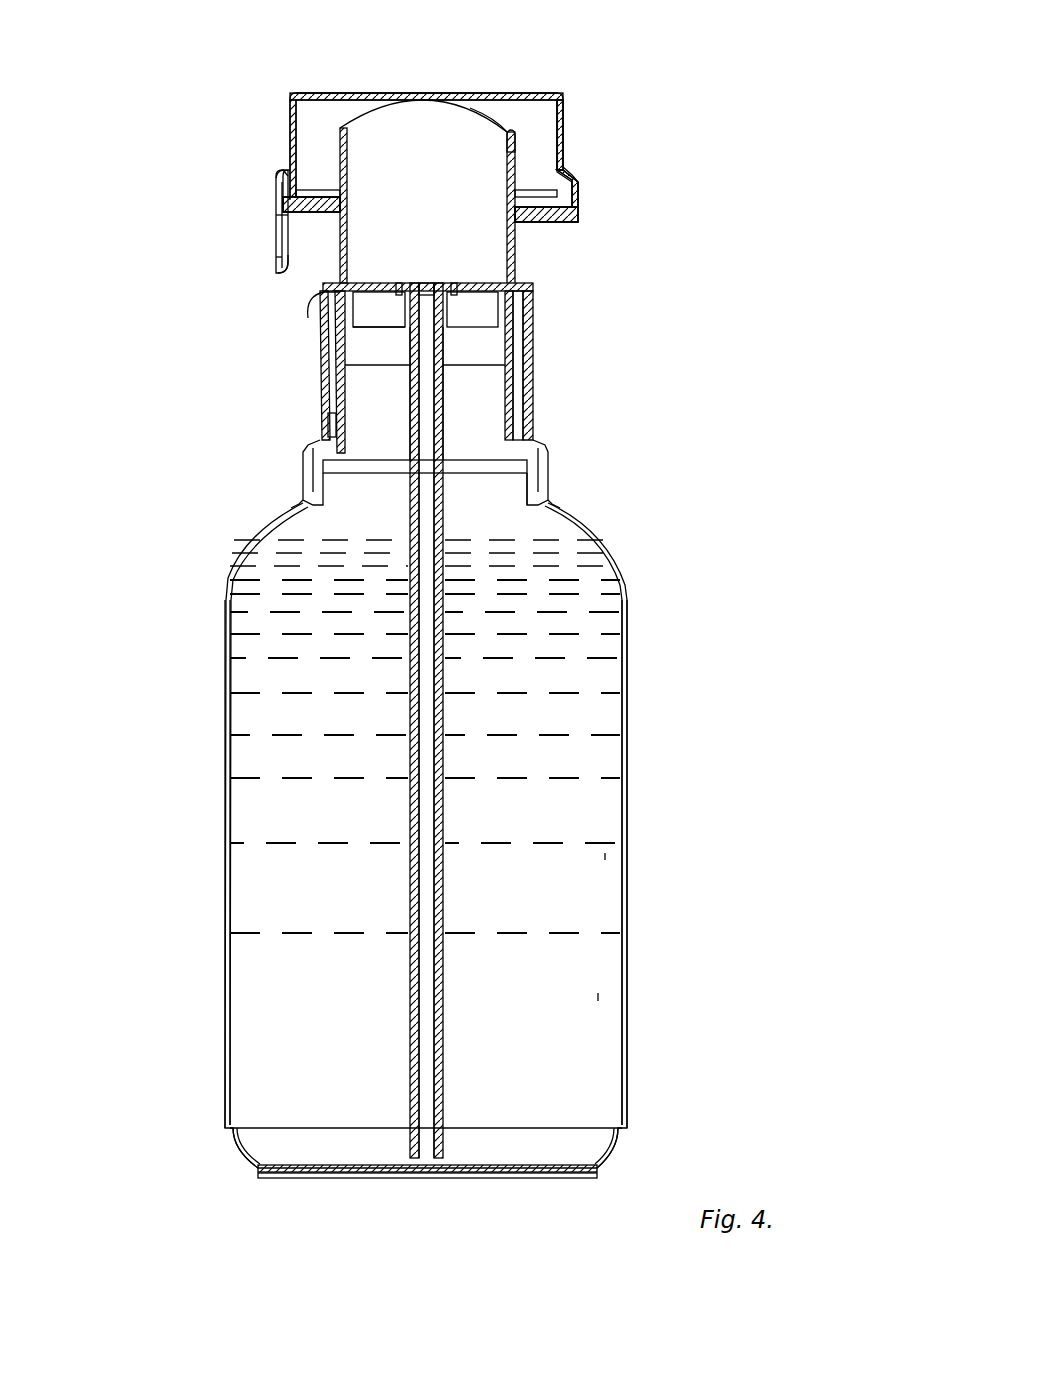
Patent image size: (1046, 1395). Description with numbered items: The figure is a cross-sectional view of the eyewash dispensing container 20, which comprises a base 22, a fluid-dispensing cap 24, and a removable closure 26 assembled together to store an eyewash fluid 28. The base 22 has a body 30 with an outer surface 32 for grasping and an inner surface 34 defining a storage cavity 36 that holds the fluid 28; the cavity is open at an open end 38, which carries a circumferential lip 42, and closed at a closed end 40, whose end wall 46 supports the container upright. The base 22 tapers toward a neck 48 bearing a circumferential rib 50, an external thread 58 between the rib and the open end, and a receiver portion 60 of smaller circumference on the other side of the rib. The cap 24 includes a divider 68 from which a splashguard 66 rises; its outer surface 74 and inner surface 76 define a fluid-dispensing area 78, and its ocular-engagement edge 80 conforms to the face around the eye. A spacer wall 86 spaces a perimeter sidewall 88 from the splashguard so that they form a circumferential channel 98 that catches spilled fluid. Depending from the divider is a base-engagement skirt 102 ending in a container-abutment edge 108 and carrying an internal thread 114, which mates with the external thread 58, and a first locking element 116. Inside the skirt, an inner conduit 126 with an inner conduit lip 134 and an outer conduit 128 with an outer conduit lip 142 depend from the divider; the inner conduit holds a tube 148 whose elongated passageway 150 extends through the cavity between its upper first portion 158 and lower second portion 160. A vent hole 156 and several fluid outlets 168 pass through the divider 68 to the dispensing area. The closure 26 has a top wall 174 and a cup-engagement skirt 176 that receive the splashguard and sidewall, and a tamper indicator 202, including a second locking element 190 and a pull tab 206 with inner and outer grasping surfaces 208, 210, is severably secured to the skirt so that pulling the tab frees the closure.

The eyewash dispensing container 20 is at (150, 86).
The base 22 is at (626, 560).
The fluid-dispensing cap 24 is at (520, 263).
The closure 26 is at (555, 78).
The eyewash fluid 28 is at (592, 692).
The body 30 is at (636, 648).
The outer surface 32 is at (631, 825).
The inner surface 34 is at (605, 855).
The storage cavity 36 is at (598, 997).
The open end 38 is at (390, 72).
The closed end 40 is at (436, 1208).
The circumferential lip 42 is at (522, 297).
The end wall 46 is at (295, 1177).
The neck 48 is at (330, 372).
The circumferential rib 50 is at (320, 470).
The external thread 58 is at (522, 408).
The receiver portion 60 is at (513, 490).
The splashguard 66 is at (510, 162).
The divider 68 is at (315, 300).
The outer surface 74 is at (513, 172).
The inner surface 76 is at (515, 147).
The fluid-dispensing area 78 is at (375, 140).
The ocular-engagement edge 80 is at (488, 118).
The spacer wall 86 is at (538, 205).
The perimeter sidewall 88 is at (565, 187).
The circumferential channel 98 is at (320, 195).
The base-engagement skirt 102 is at (333, 397).
The container-abutment edge 108 is at (560, 507).
The internal thread 114 is at (330, 420).
The first locking element 116 is at (563, 482).
The inner conduit 126 is at (447, 342).
The outer conduit 128 is at (506, 333).
The inner conduit lip 134 is at (407, 353).
The outer conduit lip 142 is at (368, 328).
The tube 148 is at (451, 1023).
The elongated passageway 150 is at (432, 980).
The vent hole 156 is at (427, 283).
The upper first portion 158 is at (488, 342).
The lower second portion 160 is at (487, 1155).
The fluid outlets 168 is at (398, 283).
The top wall 174 is at (432, 93).
The cup-engagement skirt 176 is at (280, 188).
The second locking element 190 is at (283, 217).
The tamper indicator 202 is at (598, 223).
The pull tab 206 is at (270, 240).
The inner grasping surface 208 is at (287, 262).
The outer grasping surface 210 is at (278, 257).